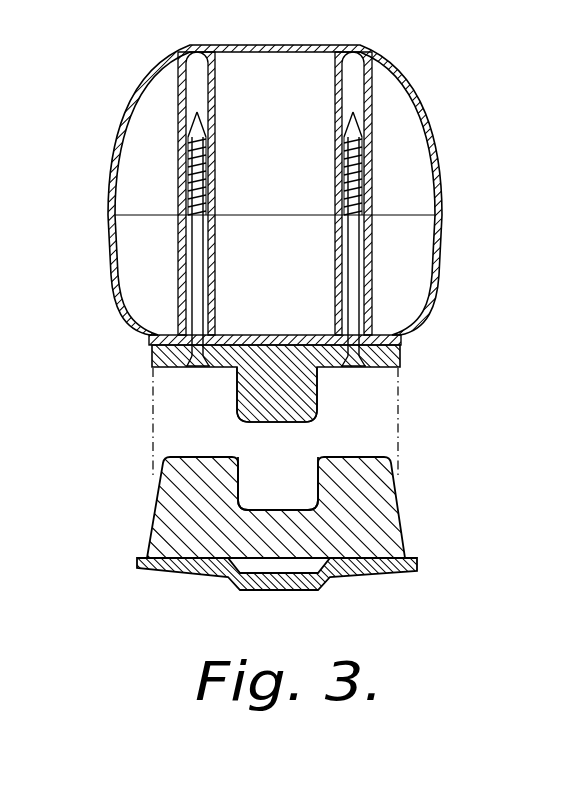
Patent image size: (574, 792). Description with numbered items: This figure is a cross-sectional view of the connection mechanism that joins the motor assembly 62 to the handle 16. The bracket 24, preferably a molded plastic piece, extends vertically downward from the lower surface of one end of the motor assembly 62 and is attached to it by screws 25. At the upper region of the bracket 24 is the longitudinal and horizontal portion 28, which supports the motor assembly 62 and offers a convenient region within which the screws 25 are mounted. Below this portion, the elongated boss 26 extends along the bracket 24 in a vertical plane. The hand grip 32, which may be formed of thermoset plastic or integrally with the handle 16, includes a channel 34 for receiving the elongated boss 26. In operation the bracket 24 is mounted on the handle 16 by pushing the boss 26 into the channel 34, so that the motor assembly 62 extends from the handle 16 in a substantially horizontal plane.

The motor assembly 62 is at (416, 98).
The screws 25 is at (196, 369).
The bracket 24 is at (273, 367).
The longitudinal and horizontal portion 28 is at (151, 346).
The elongated boss 26 is at (238, 418).
The hand grip 32 is at (404, 514).
The channel 34 is at (240, 482).
The handle 16 is at (370, 576).